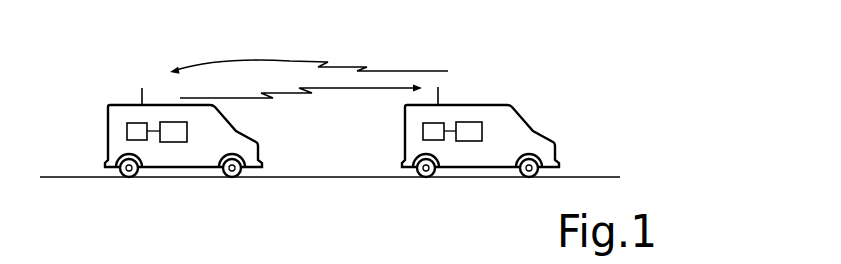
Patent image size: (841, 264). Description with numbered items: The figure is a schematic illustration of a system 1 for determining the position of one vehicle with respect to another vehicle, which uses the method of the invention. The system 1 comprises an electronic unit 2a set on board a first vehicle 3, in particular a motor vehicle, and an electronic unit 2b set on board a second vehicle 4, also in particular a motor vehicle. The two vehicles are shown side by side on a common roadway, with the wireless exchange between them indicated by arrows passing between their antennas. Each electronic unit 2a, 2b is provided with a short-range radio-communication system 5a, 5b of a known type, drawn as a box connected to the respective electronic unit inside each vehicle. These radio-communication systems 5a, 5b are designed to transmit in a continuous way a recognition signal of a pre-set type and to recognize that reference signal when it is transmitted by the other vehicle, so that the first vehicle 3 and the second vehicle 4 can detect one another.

The system for determining the position of vehicles 1 is at (453, 54).
The first vehicle 3 is at (476, 101).
The second vehicle 4 is at (119, 102).
The electronic unit 2a is at (471, 139).
The electronic unit 2b is at (127, 128).
The short-range radio-communication system 5a is at (423, 127).
The short-range radio-communication system 5b is at (167, 137).